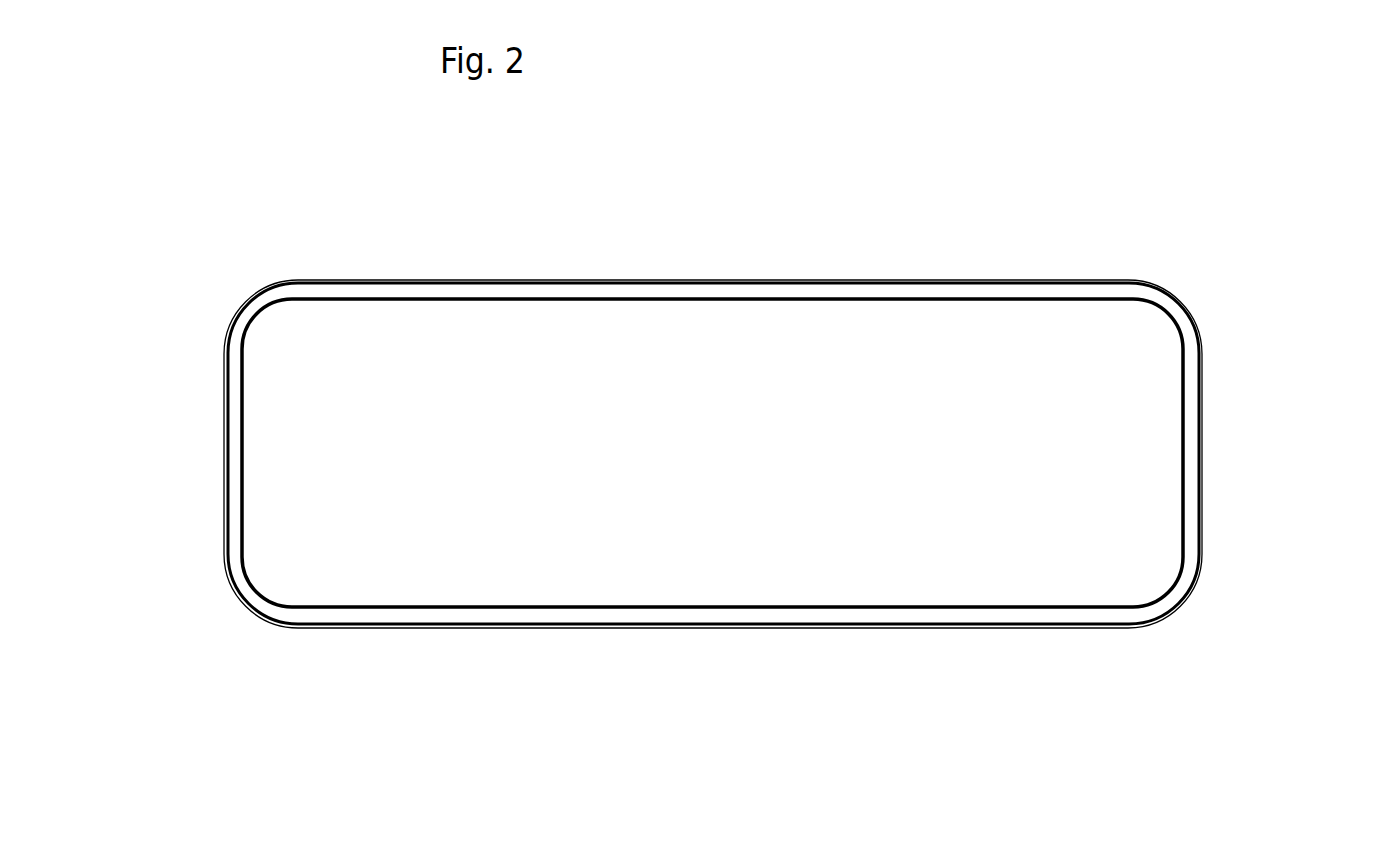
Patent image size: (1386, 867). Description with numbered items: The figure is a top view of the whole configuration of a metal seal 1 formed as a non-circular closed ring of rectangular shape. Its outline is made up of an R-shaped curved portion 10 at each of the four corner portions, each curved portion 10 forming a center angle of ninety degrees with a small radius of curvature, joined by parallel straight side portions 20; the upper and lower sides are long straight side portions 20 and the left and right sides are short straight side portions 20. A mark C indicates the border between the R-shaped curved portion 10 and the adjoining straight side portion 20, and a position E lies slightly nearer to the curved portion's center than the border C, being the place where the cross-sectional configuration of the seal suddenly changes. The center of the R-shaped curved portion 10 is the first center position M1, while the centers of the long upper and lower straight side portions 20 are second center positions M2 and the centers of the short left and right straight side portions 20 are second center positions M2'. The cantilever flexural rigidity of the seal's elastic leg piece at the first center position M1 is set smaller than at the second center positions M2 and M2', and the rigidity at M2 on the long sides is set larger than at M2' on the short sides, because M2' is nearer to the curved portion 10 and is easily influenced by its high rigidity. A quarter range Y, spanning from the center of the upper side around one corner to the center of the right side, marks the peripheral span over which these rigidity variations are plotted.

The metal seal 1 is at (897, 632).
The R-shaped curved portion 10 is at (297, 278).
The straight side portion 20 is at (1128, 628).
The first center position M1 is at (1165, 325).
The second center position M2 is at (724, 373).
The second center position M2' is at (1266, 448).
The border C is at (1128, 272).
The position E is at (1145, 323).
The quarter range Y is at (722, 129).